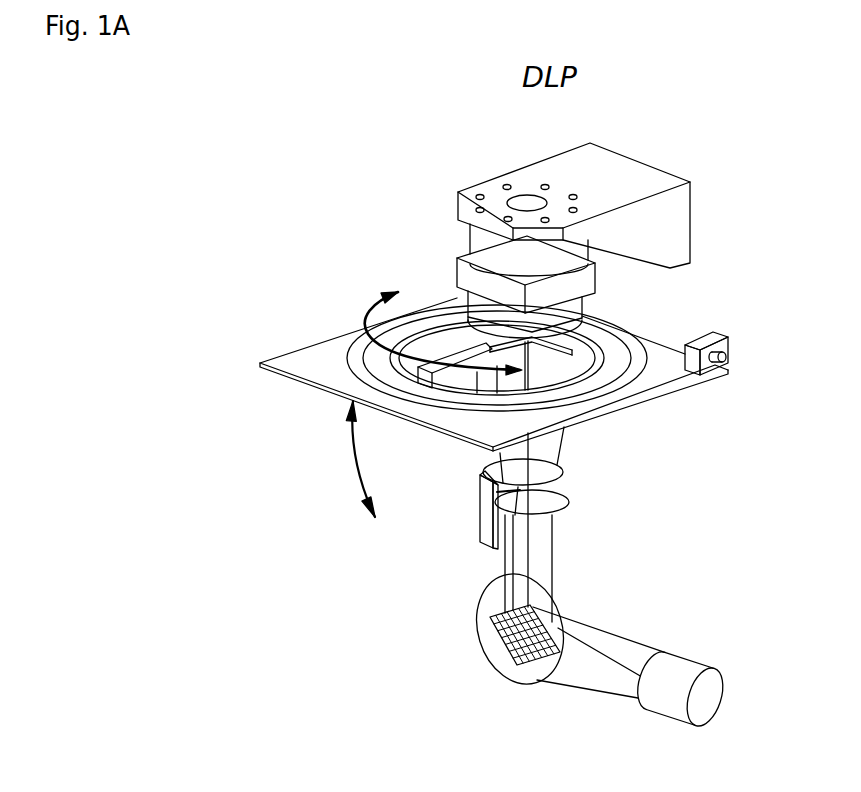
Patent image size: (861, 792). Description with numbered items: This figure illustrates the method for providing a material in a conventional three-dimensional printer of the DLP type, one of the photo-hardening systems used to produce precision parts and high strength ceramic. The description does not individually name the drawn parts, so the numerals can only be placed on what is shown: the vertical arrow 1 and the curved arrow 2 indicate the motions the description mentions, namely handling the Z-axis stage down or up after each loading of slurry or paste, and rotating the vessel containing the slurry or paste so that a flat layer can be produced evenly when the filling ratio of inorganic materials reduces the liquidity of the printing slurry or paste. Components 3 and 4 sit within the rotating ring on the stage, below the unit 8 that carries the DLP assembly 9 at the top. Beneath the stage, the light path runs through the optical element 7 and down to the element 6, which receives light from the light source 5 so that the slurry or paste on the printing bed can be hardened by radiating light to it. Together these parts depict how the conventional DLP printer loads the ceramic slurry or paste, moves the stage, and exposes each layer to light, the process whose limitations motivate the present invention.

The stage plate (vertical movement) 1 is at (350, 428).
The rotation stage / rotation direction 2 is at (365, 315).
The mirror support bar 3 is at (437, 385).
The roof mirror plate 4 is at (575, 354).
The light source 5 is at (675, 670).
The DMD (digital micromirror device) 6 is at (547, 618).
The lens 7 is at (547, 500).
The rotary drive unit 8 is at (578, 310).
The DLP housing mount plate 9 is at (670, 218).